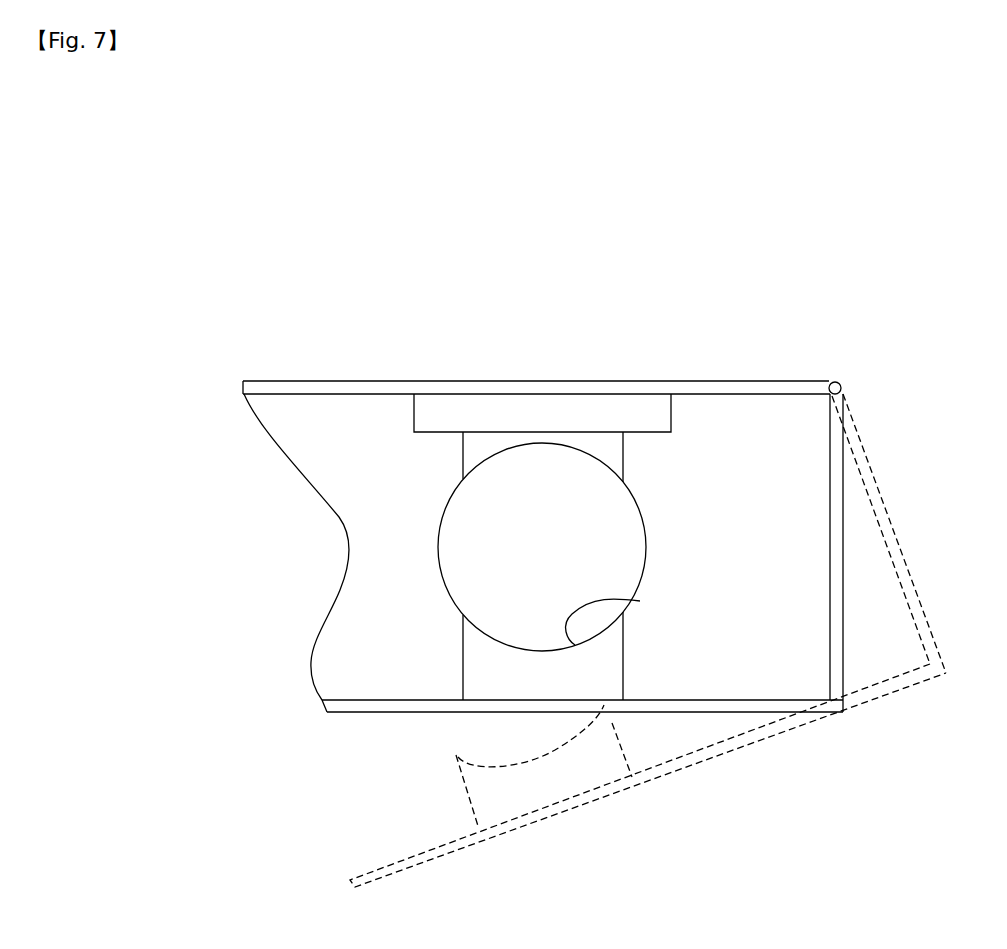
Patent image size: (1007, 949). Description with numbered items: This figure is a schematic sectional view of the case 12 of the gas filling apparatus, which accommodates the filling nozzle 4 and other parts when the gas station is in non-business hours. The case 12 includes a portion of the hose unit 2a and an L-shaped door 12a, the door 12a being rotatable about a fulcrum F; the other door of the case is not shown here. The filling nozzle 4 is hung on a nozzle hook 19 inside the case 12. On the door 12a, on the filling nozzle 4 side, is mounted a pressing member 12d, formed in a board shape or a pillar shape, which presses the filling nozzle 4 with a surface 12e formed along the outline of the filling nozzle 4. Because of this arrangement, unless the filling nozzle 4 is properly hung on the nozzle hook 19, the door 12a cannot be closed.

The case 12 is at (275, 694).
The door 12a is at (366, 712).
The pressing member 12d is at (497, 682).
The surface 12e is at (640, 601).
The nozzle hook 19 is at (543, 410).
The hose unit 2a is at (738, 381).
The filling nozzle 4 is at (607, 532).
The fulcrum F is at (841, 383).